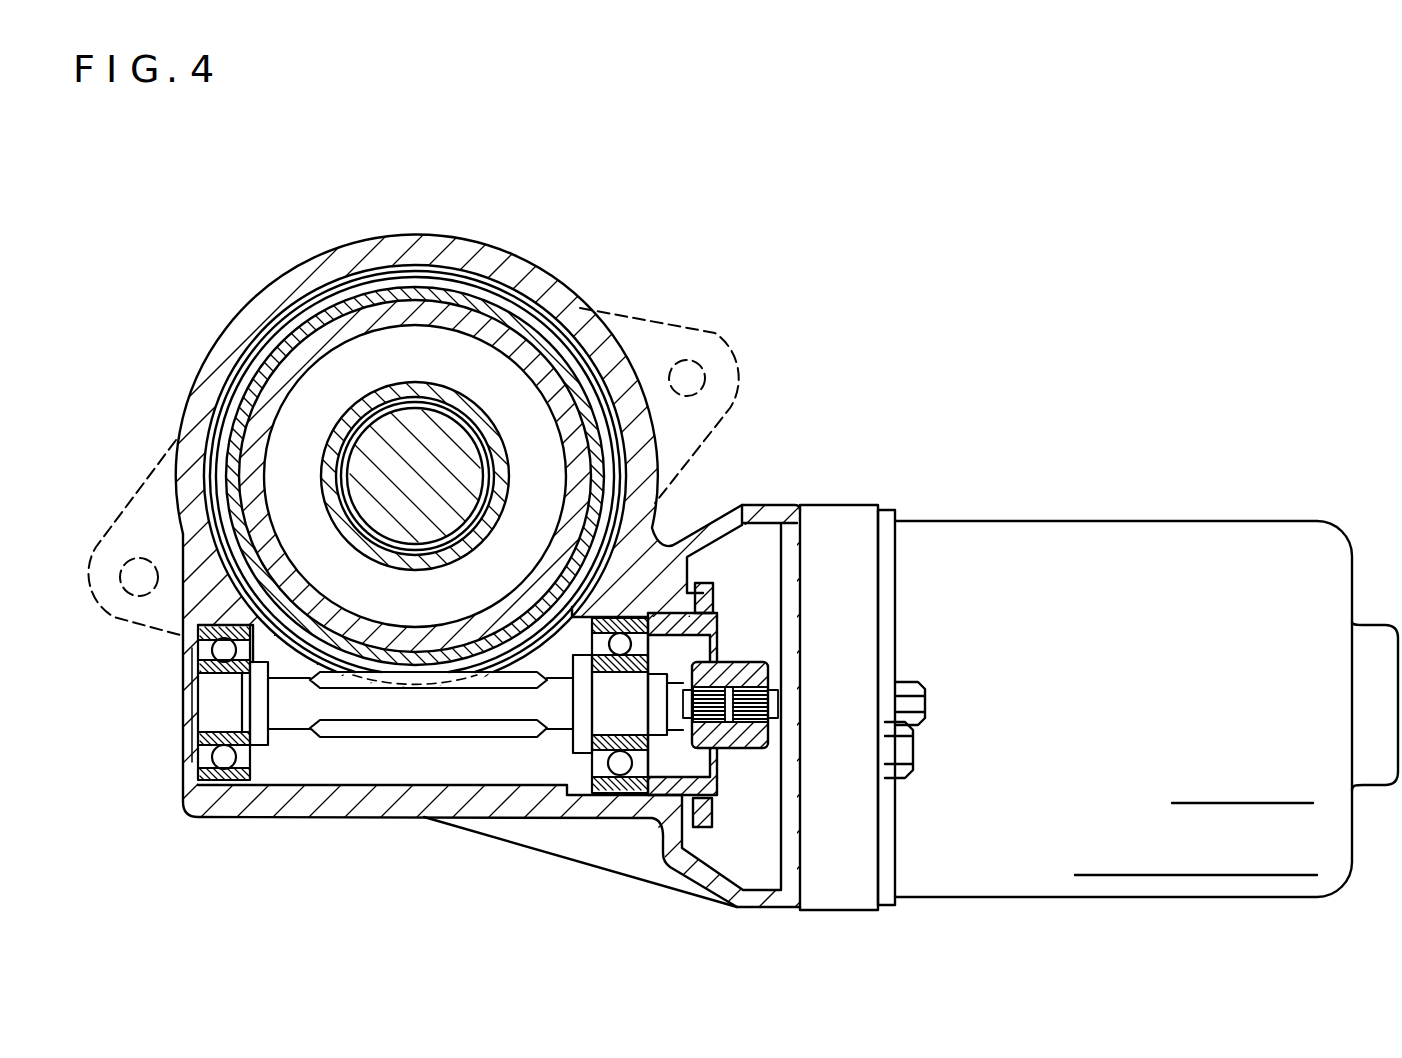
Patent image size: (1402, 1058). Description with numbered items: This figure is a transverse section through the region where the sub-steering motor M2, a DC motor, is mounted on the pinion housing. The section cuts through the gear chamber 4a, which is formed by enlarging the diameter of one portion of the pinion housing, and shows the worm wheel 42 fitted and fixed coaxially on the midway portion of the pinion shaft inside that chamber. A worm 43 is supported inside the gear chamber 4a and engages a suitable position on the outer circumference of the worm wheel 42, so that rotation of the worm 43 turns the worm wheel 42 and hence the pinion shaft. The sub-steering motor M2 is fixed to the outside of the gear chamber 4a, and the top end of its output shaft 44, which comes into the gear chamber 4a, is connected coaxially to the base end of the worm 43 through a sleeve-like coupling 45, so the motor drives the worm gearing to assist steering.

The gear chamber 4a is at (538, 285).
The worm wheel 42 is at (440, 287).
The worm 43 is at (370, 735).
The output shaft 44 is at (752, 690).
The sleeve-like coupling 45 is at (745, 672).
The sub-steering motor M2 is at (1133, 522).